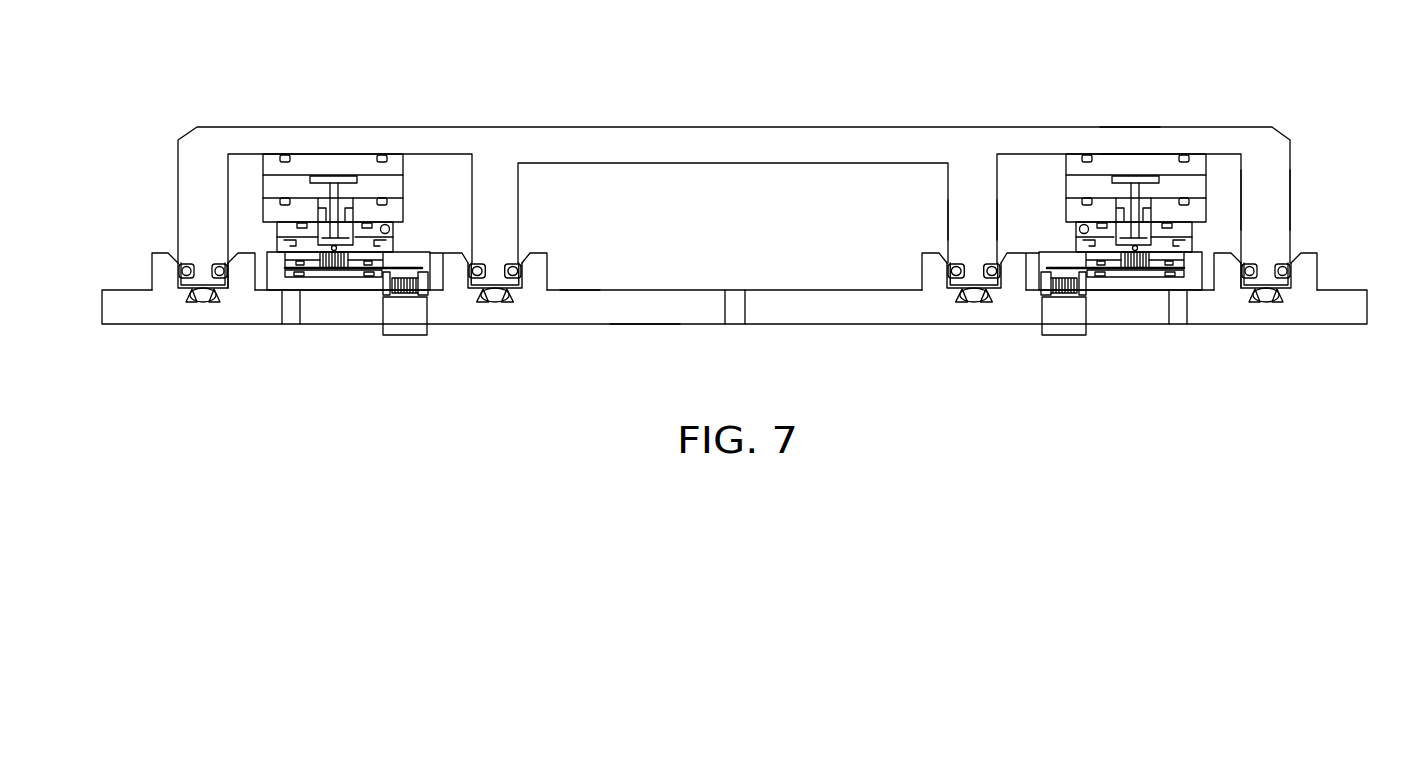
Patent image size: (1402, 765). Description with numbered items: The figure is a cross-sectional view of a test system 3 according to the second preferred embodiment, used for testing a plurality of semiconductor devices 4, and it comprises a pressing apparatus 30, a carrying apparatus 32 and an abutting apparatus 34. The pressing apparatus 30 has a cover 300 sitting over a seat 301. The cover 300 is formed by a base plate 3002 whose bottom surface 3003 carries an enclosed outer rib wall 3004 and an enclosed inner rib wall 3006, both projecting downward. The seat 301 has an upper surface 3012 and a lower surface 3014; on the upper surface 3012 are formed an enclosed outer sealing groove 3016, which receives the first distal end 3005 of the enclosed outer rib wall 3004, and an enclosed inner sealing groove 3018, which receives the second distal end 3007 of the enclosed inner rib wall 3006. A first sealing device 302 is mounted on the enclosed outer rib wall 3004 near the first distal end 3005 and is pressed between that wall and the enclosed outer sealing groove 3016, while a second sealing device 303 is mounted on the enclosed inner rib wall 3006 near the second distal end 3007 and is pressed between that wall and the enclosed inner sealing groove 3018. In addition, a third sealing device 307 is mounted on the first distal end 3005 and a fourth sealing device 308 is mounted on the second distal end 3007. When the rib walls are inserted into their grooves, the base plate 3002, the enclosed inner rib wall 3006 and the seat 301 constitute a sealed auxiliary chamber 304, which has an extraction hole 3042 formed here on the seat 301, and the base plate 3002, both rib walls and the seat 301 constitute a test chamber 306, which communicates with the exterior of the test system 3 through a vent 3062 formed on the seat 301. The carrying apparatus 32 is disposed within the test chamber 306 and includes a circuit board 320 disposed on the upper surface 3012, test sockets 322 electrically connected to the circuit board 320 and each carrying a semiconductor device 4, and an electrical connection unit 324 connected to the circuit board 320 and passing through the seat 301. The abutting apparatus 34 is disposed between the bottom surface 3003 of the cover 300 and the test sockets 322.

The test system 3 is at (734, 108).
The pressing apparatus 30 is at (1347, 73).
The cover 300 is at (1277, 143).
The seat 301 is at (1342, 305).
The first sealing device 302 is at (214, 298).
The second sealing device 303 is at (505, 300).
The auxiliary chamber 304 is at (588, 190).
The test chamber 306 is at (440, 190).
The bottom surface 3003 is at (1020, 153).
The base plate 3002 is at (1128, 143).
The enclosed outer rib wall 3004 is at (1262, 173).
The enclosed inner rib wall 3006 is at (968, 183).
The second distal end 3007 is at (948, 292).
The upper surface 3012 is at (577, 291).
The lower surface 3014 is at (680, 376).
The extraction hole 3042 is at (733, 310).
The vent 3062 is at (293, 308).
The abutting apparatus 34 is at (365, 212).
The semiconductor device 4 is at (338, 268).
The electrical connection unit 324 is at (403, 293).
The circuit board 320 is at (1118, 268).
The test socket 322 is at (1153, 263).
The carrying apparatus 32 is at (1175, 367).
The enclosed outer sealing groove 3016 is at (1250, 303).
The enclosed inner sealing groove 3018 is at (962, 302).
The fourth sealing device 308 is at (977, 298).
The third sealing device 307 is at (1267, 300).
The first distal end 3005 is at (1287, 290).